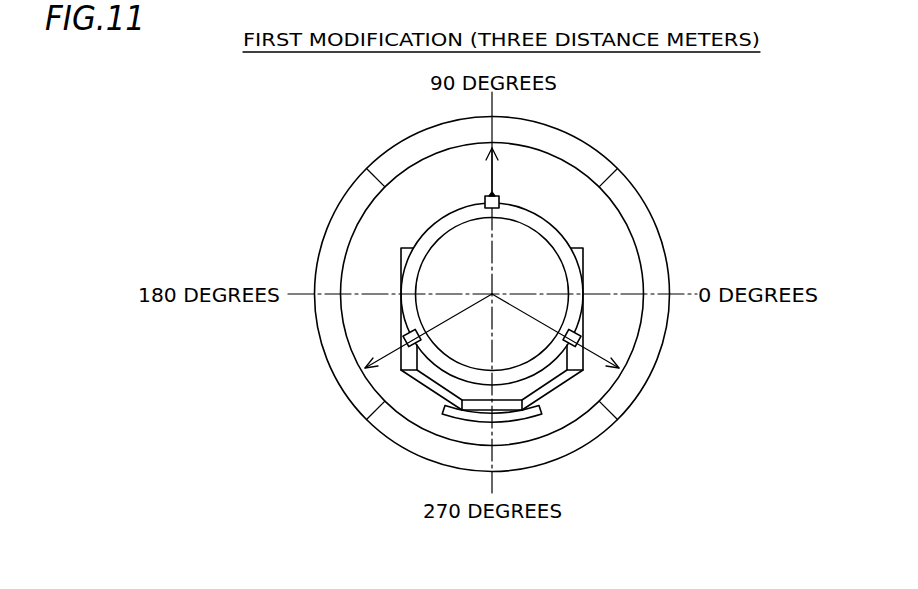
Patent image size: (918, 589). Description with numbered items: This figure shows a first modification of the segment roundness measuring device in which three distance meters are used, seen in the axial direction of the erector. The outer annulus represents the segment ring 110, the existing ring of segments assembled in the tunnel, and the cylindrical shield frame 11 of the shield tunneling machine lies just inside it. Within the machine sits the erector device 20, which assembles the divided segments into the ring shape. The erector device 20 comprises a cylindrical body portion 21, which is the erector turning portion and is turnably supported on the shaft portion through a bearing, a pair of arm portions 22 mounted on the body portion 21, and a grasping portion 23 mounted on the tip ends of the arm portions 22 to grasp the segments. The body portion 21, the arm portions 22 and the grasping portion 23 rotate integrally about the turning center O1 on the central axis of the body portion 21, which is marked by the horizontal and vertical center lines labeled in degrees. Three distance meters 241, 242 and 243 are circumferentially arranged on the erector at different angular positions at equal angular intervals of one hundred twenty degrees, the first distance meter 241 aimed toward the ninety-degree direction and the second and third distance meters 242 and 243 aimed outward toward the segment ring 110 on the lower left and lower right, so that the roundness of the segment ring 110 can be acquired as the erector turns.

The segment ring 110 is at (649, 205).
The shield frame 11 is at (644, 274).
The erector device 20 is at (548, 196).
The cylindrical body portion 21 is at (418, 248).
The turning center O1 is at (492, 294).
The arm portions 22 is at (400, 336).
The grasping portion 23 is at (452, 413).
The distance meter 241 is at (486, 198).
The distance meter 242 is at (372, 372).
The distance meter 243 is at (580, 380).